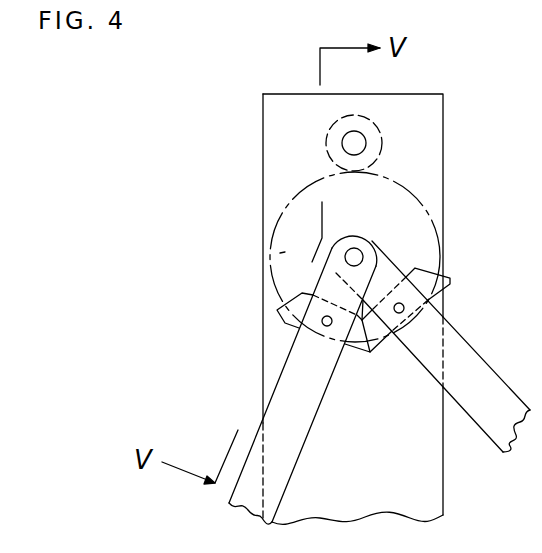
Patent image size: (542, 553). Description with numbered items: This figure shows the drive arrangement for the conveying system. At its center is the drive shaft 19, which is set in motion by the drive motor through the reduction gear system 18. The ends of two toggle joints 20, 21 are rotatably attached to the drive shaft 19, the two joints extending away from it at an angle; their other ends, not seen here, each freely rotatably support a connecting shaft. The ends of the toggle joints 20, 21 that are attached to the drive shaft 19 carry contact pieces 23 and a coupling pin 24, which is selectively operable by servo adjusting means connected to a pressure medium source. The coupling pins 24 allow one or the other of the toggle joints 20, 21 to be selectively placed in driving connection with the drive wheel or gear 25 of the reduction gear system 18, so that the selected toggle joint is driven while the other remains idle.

The reduction gear system 18 is at (310, 145).
The drive shaft 19 is at (369, 258).
The toggle joint 20 is at (251, 417).
The toggle joint 21 is at (479, 341).
The contact piece 23 is at (278, 321).
The coupling pin 24 is at (309, 310).
The drive wheel or gear 25 is at (267, 228).